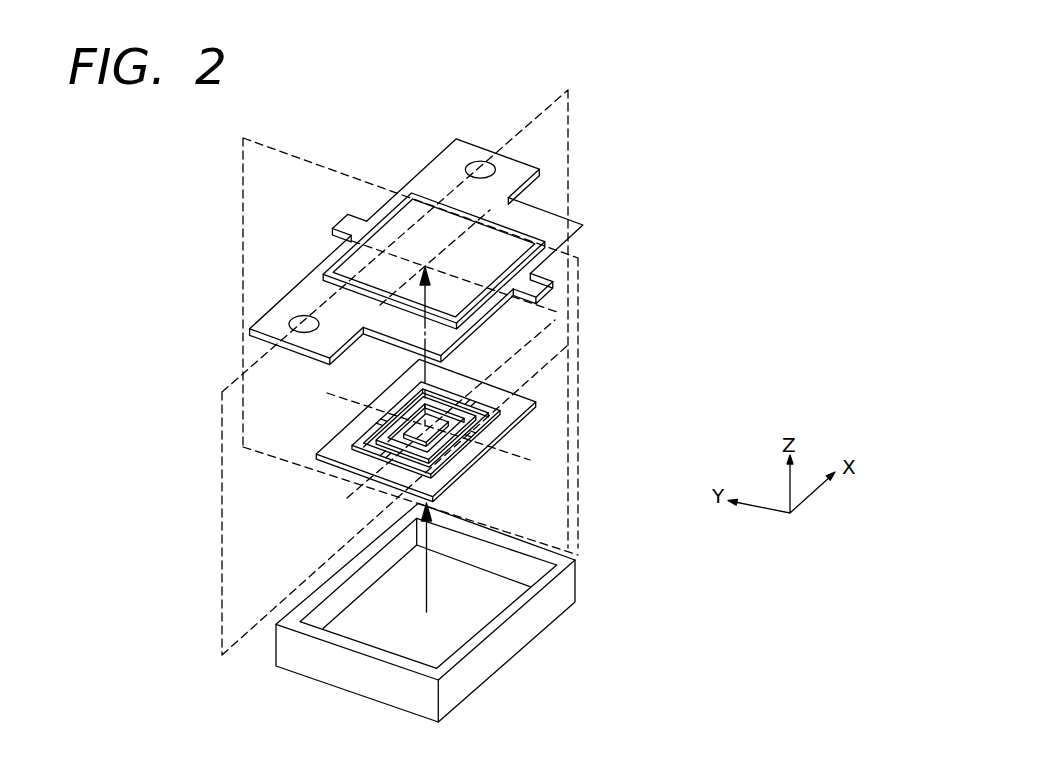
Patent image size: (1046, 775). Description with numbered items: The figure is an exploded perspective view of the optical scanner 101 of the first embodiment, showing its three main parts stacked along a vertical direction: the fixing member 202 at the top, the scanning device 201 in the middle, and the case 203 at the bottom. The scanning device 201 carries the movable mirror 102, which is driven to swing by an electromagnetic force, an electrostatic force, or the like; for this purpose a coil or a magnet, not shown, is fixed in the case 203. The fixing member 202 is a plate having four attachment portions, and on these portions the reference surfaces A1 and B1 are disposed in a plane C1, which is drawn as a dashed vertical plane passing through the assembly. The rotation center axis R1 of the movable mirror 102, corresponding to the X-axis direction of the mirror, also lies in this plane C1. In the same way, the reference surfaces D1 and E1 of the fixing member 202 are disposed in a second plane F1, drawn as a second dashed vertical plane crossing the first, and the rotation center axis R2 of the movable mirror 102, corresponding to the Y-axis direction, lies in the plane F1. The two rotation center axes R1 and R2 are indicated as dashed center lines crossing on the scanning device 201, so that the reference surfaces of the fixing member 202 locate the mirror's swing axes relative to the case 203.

The optical scanner 101 is at (745, 190).
The movable mirror 102 is at (493, 443).
The scanning device 201 is at (520, 410).
The fixing member 202 is at (553, 227).
The case 203 is at (537, 628).
The reference surface A1 is at (523, 187).
The reference surface B1 is at (315, 340).
The plane C1 is at (238, 517).
The reference surface D1 is at (333, 222).
The reference surface E1 is at (520, 300).
The plane F1 is at (268, 234).
The rotation center axis R1 is at (500, 363).
The rotation center axis R2 is at (513, 458).